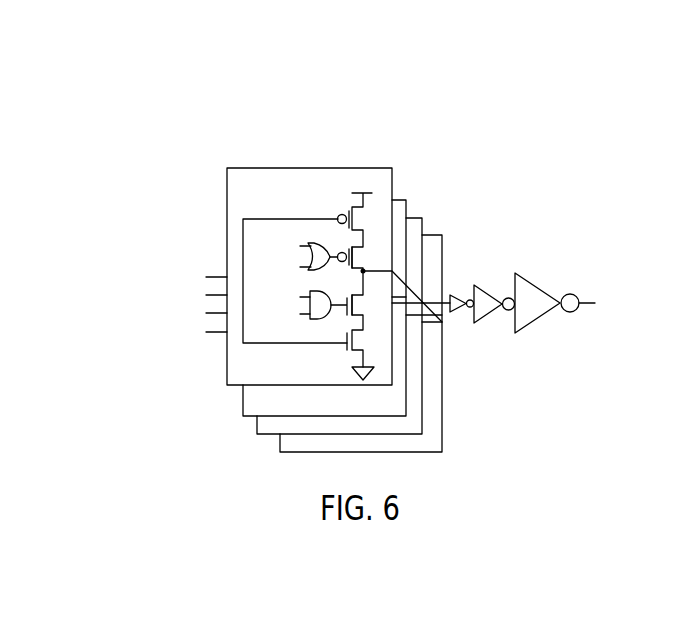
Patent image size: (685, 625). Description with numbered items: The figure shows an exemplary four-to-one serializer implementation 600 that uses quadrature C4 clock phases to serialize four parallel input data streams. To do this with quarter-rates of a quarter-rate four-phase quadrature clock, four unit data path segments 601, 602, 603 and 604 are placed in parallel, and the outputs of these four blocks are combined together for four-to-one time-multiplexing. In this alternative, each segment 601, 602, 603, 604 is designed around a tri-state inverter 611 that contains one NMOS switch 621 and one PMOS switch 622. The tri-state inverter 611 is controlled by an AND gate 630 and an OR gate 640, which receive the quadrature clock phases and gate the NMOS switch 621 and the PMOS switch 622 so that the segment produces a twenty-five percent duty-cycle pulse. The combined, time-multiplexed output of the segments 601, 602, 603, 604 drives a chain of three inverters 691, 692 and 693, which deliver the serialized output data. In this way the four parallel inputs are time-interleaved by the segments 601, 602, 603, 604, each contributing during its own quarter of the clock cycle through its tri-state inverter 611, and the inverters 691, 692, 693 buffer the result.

The 4:1 serializer implementation 600 is at (317, 80).
The tri-state inverter 611 is at (365, 148).
The segment 601 is at (390, 168).
The segment 602 is at (406, 200).
The segment 603 is at (422, 218).
The segment 604 is at (442, 235).
The PMOS switch 622 is at (378, 256).
The NMOS switch 621 is at (366, 305).
The OR gate 640 is at (320, 243).
The AND gate 630 is at (318, 321).
The inverter 691 is at (453, 308).
The inverter 692 is at (488, 317).
The inverter 693 is at (542, 318).